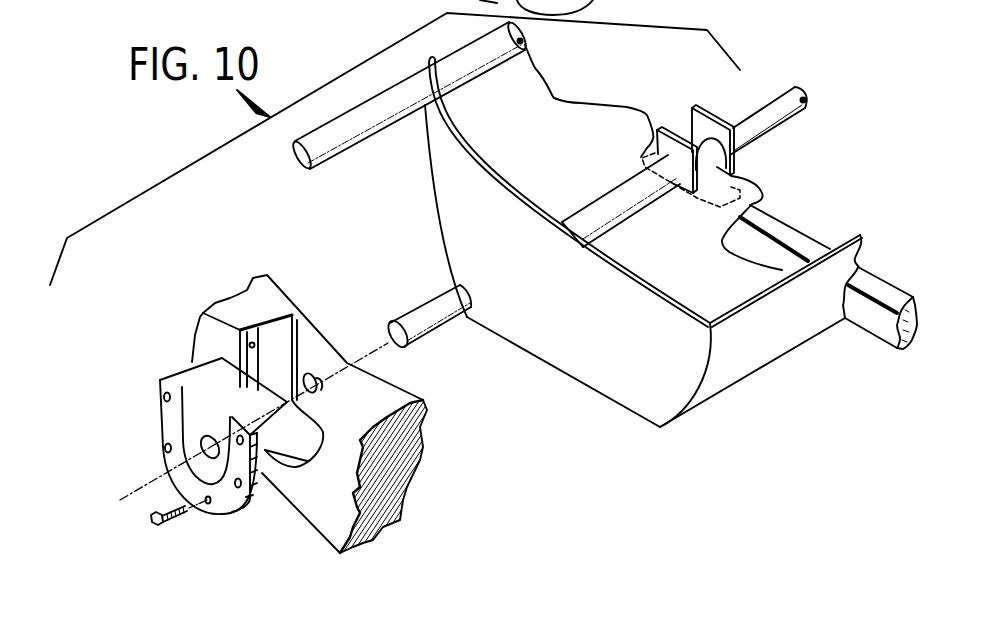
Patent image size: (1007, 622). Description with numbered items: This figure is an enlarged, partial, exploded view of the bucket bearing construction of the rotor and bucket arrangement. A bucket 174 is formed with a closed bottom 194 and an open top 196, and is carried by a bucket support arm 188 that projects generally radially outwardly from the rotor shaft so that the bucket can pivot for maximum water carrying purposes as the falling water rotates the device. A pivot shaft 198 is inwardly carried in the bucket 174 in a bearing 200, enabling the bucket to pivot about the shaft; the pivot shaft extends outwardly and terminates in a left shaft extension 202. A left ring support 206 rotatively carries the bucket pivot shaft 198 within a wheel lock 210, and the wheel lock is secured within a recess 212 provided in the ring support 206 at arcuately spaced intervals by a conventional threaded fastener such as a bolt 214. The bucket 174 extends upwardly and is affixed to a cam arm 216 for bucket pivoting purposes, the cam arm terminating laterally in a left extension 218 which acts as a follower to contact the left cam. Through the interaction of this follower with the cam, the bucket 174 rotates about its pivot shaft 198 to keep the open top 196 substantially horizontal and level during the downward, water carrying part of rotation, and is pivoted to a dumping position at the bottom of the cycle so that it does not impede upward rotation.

The bucket 174 is at (682, 413).
The bucket support arm 188 is at (873, 322).
The closed bottom 194 is at (593, 390).
The open top 196 is at (763, 295).
The pivot shaft 198 is at (753, 118).
The bearing 200 is at (707, 172).
The left shaft extension 202 is at (420, 306).
The left ring support 206 is at (305, 498).
The wheel lock 210 is at (194, 371).
The recess 212 is at (313, 345).
The bolt 214 is at (152, 527).
The cam arm 216 is at (472, 57).
The left extension 218 is at (378, 130).